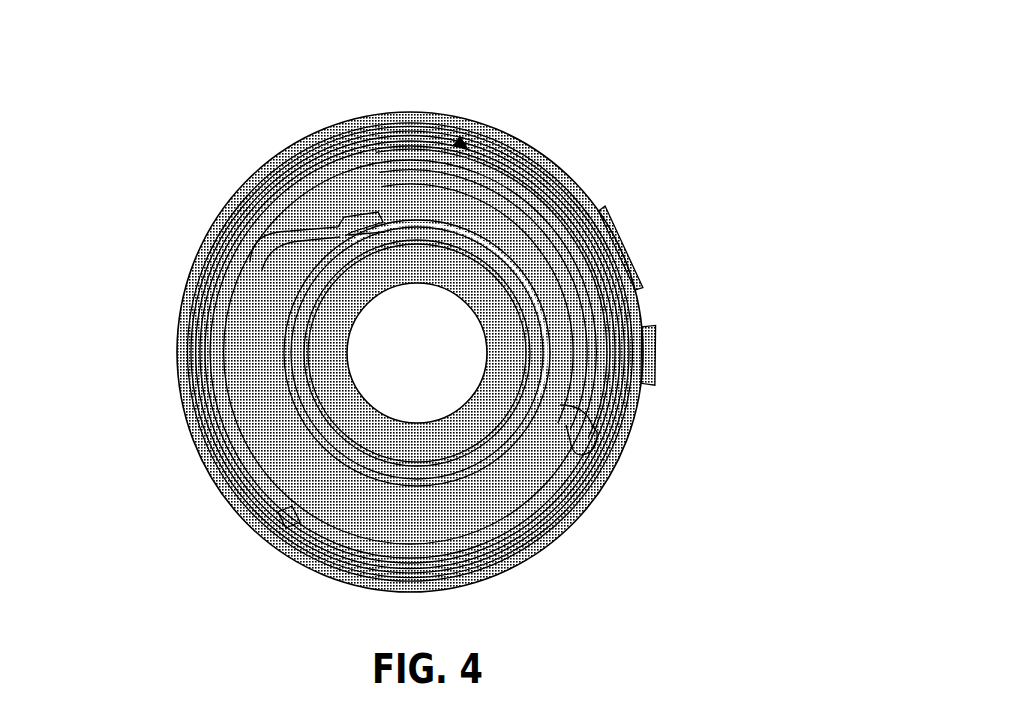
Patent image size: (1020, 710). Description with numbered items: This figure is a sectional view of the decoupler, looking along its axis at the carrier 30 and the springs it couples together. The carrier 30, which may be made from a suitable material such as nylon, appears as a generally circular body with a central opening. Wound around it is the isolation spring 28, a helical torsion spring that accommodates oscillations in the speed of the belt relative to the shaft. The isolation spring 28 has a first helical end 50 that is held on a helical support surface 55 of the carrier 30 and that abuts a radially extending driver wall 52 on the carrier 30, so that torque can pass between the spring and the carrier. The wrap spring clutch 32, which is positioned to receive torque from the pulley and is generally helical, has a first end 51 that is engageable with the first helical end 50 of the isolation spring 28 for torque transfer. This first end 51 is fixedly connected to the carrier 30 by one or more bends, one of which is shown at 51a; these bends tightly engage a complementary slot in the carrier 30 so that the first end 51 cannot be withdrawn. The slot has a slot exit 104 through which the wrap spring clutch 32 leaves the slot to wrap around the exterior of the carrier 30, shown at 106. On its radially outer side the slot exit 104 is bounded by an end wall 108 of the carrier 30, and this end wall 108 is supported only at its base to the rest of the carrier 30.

The isolation spring 28 is at (480, 520).
The carrier 30 is at (600, 190).
The wrap spring clutch 32 is at (350, 150).
The first helical end 50 is at (555, 442).
The first end 51 is at (575, 373).
The bend 51a is at (583, 312).
The driver wall 52 is at (580, 452).
The helical support surface 55 is at (280, 235).
The slot exit 104 is at (457, 141).
The exterior of the carrier 106 is at (235, 250).
The end wall 108 is at (517, 157).